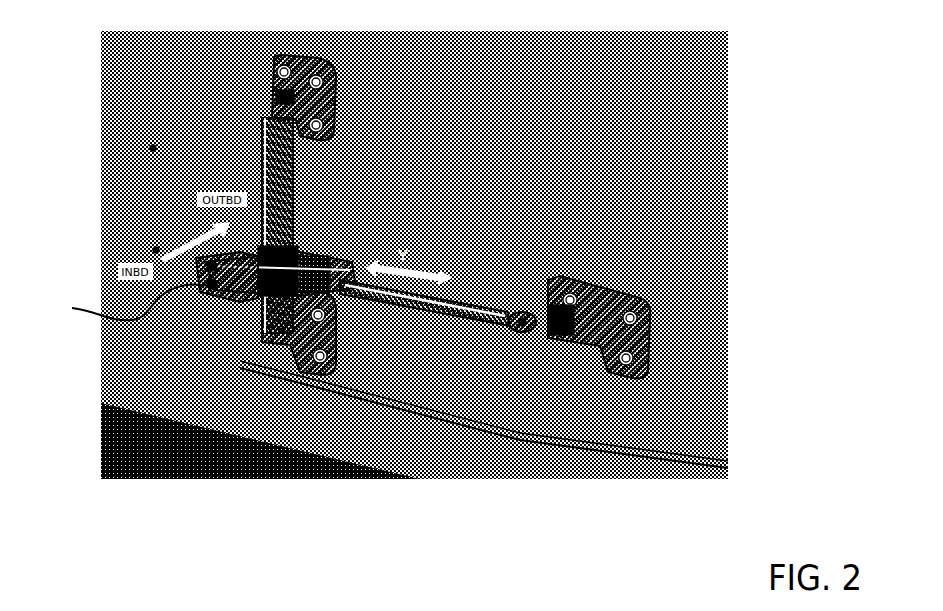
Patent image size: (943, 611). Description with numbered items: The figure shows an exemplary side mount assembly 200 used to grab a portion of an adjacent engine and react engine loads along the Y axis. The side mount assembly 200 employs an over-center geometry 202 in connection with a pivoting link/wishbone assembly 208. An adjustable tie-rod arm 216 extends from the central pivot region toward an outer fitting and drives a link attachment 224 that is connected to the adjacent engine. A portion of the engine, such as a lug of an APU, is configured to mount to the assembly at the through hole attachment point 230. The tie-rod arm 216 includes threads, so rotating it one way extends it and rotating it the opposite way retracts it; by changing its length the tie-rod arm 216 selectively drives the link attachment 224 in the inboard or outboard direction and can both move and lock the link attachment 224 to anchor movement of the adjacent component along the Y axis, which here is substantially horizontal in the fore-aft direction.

The side mount assembly 200 is at (435, 130).
The over-center geometry 202 is at (297, 252).
The pivoting link/wishbone assembly 208 is at (260, 124).
The tie-rod arm 216 is at (362, 293).
The link attachment 224 is at (206, 292).
The through hole attachment point 230 is at (115, 303).